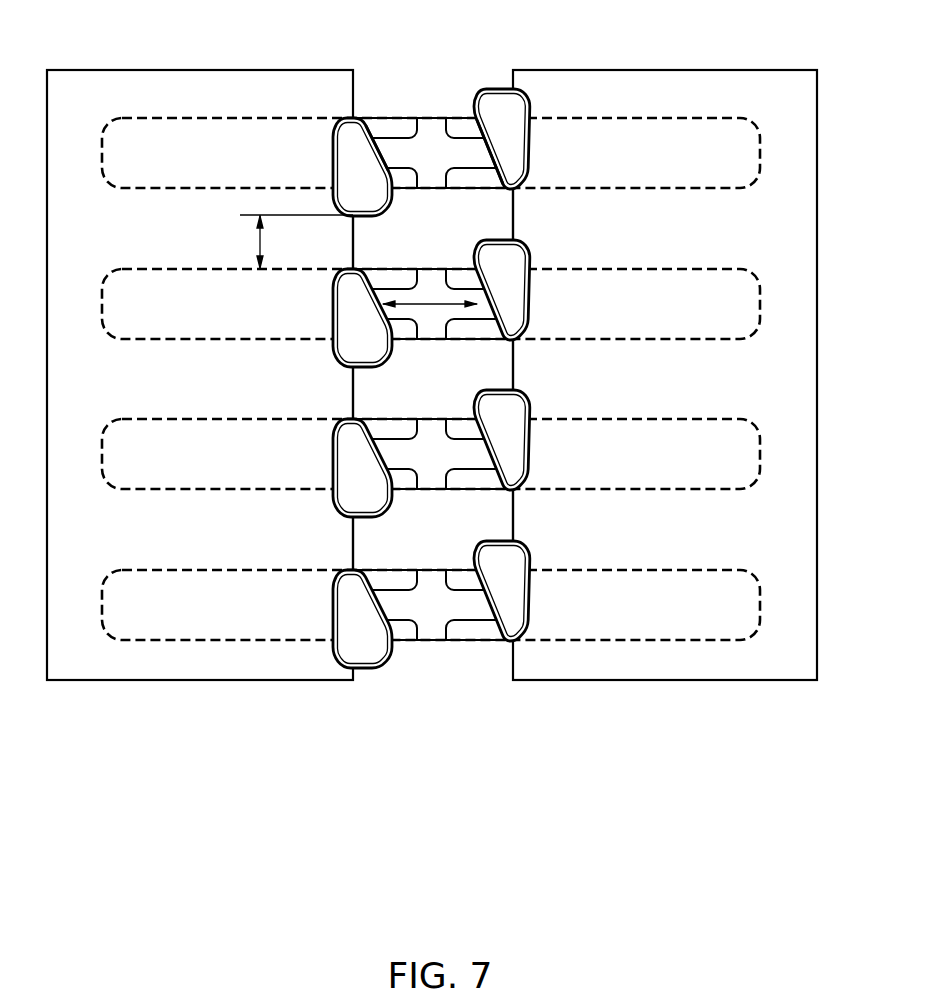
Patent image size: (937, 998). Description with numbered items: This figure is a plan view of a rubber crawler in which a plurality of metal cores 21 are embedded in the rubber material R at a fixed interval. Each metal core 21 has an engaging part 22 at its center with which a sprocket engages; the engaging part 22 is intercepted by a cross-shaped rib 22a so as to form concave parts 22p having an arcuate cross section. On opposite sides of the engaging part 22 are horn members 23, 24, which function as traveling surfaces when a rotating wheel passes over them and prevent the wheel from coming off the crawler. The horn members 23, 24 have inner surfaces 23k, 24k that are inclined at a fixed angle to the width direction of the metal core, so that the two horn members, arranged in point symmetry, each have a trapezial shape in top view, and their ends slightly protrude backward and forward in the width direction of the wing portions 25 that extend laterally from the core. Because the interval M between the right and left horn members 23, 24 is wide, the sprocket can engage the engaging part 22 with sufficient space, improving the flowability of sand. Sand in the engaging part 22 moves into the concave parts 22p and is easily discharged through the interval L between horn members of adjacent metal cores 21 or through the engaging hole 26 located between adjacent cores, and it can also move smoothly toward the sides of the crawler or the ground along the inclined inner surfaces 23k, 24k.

The metal core 21 is at (738, 126).
The engaging part 22 is at (433, 396).
The cross-shaped rib 22a is at (437, 118).
The concave part 22p is at (388, 118).
The horn member 23 is at (493, 103).
The inner surface 23k is at (488, 149).
The horn member 24 is at (340, 118).
The inner surface 24k is at (390, 154).
The wing portion 25 is at (227, 633).
The engaging hole 26 is at (433, 379).
The rubber material R is at (790, 104).
The interval between adjacent horn members L is at (293, 242).
The interval between right and left horn members M is at (430, 290).